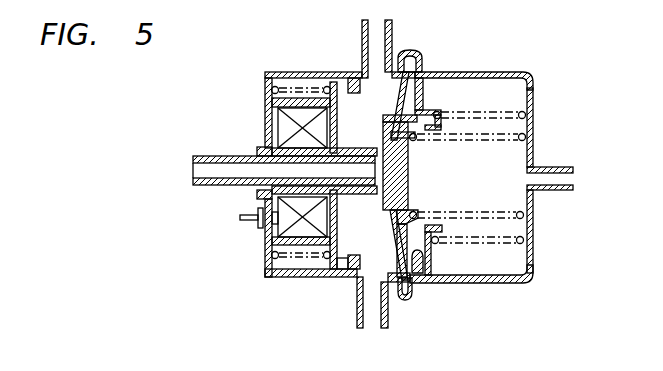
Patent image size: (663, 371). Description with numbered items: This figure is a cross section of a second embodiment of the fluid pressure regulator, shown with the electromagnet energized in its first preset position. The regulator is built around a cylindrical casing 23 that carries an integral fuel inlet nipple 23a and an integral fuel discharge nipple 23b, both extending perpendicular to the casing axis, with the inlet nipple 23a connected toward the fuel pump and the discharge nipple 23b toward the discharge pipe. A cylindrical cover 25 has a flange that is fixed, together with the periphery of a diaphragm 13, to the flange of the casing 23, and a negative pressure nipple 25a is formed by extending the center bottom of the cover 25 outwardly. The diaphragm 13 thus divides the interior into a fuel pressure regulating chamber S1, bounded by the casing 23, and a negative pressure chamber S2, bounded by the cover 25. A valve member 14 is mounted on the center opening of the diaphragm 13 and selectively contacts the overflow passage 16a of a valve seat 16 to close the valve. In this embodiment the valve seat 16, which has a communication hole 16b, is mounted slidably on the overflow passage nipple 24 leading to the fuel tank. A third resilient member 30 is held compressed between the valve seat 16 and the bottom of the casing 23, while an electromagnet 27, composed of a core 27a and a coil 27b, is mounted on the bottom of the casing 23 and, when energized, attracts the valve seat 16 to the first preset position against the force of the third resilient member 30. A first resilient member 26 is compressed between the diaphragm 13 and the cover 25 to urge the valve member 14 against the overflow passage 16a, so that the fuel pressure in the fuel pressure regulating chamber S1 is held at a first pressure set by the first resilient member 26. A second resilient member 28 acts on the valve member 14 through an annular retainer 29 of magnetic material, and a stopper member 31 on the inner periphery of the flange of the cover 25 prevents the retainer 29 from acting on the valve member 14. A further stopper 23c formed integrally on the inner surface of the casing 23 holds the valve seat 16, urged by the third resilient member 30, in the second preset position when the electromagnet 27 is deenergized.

The diaphragm 13 is at (392, 112).
The valve member 14 is at (384, 128).
The valve seat 16 is at (345, 152).
The overflow passage 16a is at (373, 198).
The communication hole 16b is at (357, 265).
The casing 23 is at (287, 277).
The fuel inlet nipple 23a is at (392, 32).
The fuel discharge nipple 23b is at (387, 313).
The stopper 23c is at (347, 262).
The overflow passage nipple 24 is at (208, 188).
The cover 25 is at (533, 97).
The negative pressure nipple 25a is at (572, 167).
The first resilient member 26 is at (520, 215).
The electromagnet 27 is at (252, 105).
The core 27a is at (285, 100).
The coil 27b is at (283, 123).
The second resilient member 28 is at (520, 240).
The retainer 29 is at (432, 254).
The third resilient member 30 is at (310, 87).
The stopper member 31 is at (422, 283).
The fuel pressure regulating chamber S1 is at (375, 250).
The negative pressure chamber S2 is at (518, 157).